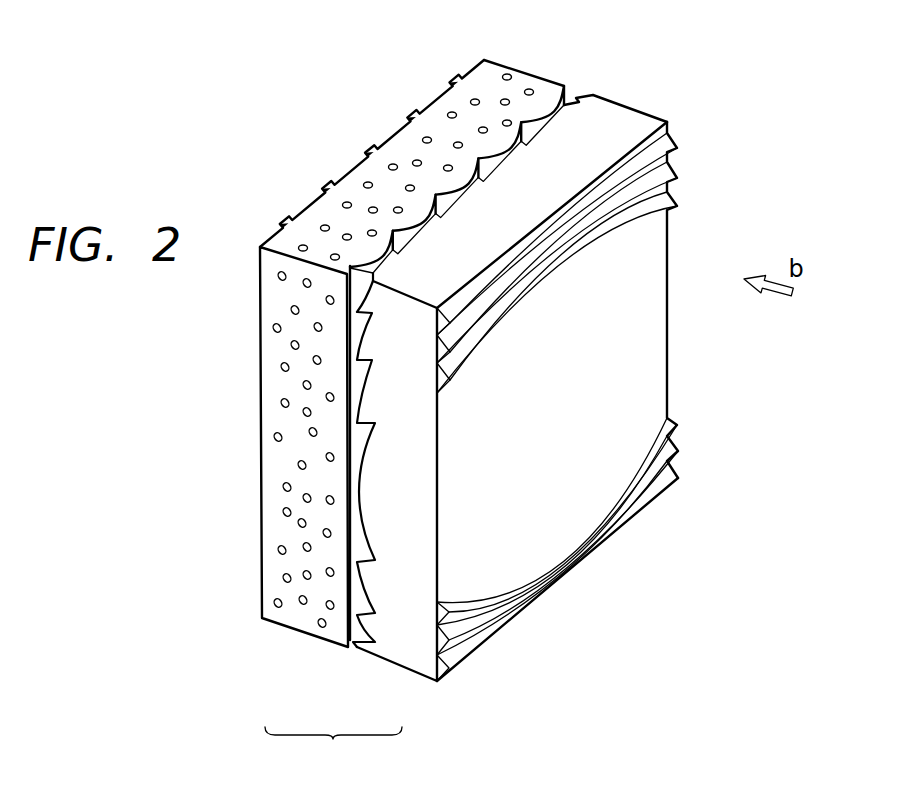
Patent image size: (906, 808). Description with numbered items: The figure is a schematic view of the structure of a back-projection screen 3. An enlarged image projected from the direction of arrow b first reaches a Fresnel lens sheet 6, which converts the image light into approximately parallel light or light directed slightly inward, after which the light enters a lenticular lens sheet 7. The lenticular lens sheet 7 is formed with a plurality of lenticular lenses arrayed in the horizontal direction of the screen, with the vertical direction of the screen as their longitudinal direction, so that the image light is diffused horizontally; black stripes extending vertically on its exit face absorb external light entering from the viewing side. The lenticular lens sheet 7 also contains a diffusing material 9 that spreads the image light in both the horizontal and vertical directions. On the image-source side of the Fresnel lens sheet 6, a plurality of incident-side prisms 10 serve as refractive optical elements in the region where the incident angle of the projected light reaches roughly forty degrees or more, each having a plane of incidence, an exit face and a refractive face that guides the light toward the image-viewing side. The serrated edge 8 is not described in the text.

The back-projection screen 3 is at (333, 752).
The Fresnel lens sheet 6 is at (382, 654).
The lenticular lens sheet 7 is at (296, 634).
The serrated edge 8 is at (444, 92).
The diffusing material 9 is at (530, 88).
The incident-side prisms 10 is at (676, 140).